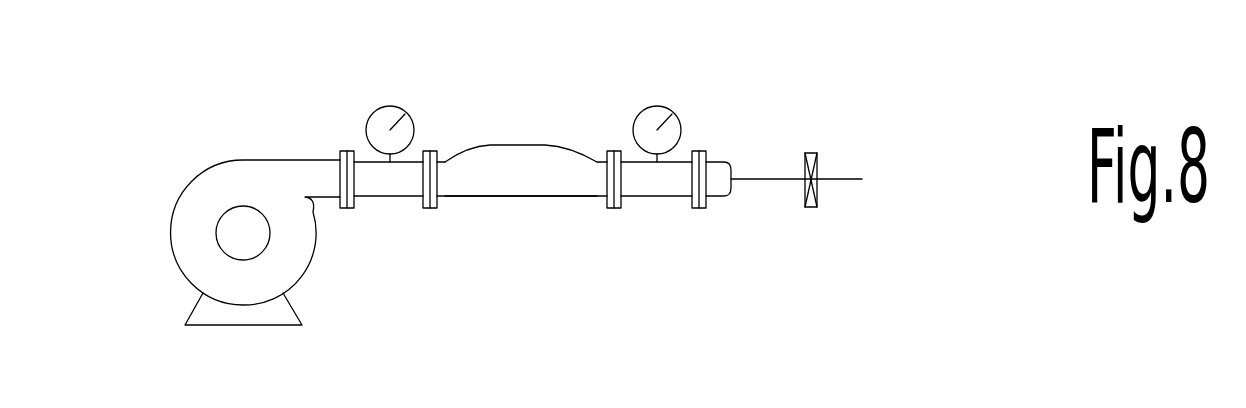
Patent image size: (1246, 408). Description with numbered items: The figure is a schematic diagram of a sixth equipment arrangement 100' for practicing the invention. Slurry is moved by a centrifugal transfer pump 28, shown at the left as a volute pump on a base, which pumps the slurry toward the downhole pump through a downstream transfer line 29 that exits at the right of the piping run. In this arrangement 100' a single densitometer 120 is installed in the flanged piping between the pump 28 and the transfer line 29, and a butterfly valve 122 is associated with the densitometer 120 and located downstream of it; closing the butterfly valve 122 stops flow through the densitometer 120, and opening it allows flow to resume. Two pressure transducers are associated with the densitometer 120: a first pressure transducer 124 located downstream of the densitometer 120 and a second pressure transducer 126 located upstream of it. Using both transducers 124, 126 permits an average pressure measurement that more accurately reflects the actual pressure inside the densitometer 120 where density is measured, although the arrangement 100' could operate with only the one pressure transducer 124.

The centrifugal transfer pump 28 is at (217, 160).
The downstream transfer line 29 is at (717, 197).
The sixth equipment arrangement 100' is at (595, 106).
The densitometer 120 is at (516, 144).
The butterfly valve 122 is at (817, 152).
The first pressure transducer 124 is at (643, 108).
The second pressure transducer 126 is at (376, 108).